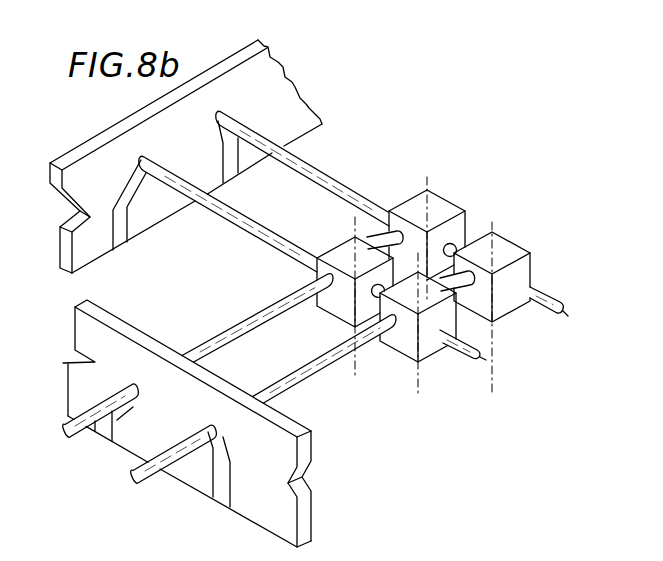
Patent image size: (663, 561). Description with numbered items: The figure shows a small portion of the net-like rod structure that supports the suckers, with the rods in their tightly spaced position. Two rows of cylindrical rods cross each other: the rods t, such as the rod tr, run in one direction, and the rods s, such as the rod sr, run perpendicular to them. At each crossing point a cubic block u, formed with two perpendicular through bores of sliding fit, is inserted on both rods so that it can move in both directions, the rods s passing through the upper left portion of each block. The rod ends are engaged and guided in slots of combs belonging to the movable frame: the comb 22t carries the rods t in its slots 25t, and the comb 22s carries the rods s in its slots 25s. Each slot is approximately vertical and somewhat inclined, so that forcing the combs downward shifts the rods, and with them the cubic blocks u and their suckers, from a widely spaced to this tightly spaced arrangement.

The comb for the rods t 22t is at (125, 127).
The comb for the rods s 22s is at (283, 517).
The slot of comb 22t 25t is at (125, 198).
The slot of comb 22s 25s is at (218, 457).
The rod t_r tr is at (230, 221).
The rod s_r sr is at (287, 377).
The cubic block u is at (445, 213).